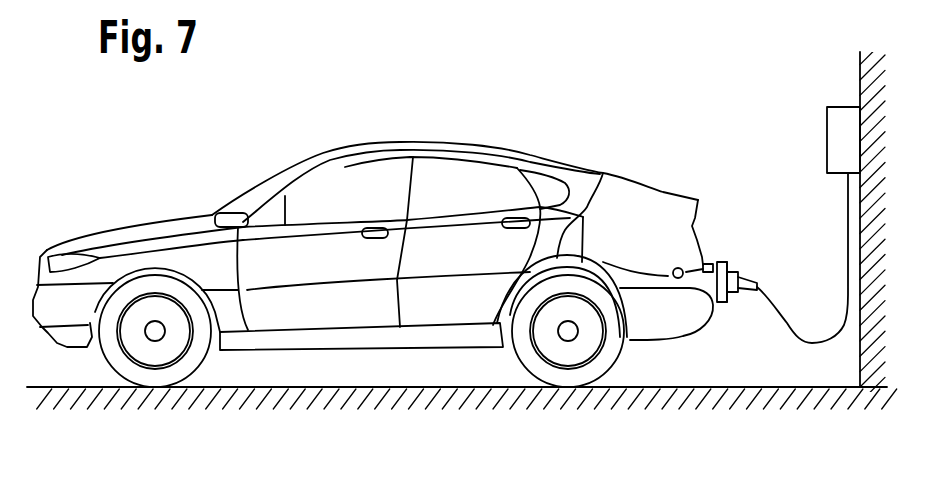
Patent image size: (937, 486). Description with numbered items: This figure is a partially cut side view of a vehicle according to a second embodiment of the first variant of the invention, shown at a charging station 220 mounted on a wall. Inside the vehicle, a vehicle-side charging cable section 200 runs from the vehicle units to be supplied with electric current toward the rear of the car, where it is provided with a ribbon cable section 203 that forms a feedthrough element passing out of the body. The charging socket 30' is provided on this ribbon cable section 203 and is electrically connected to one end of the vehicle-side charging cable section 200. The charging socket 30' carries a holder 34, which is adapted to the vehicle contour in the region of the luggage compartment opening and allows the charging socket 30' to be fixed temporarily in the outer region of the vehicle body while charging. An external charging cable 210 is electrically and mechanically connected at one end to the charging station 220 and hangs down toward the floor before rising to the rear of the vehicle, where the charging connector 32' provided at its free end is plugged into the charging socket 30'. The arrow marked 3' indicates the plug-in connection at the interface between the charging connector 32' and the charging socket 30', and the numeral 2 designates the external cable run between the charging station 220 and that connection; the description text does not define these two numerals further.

The charging cable 2 is at (787, 305).
The charging plug connection 3' is at (753, 221).
The charging socket 30' is at (722, 362).
The charging connector 32' is at (757, 326).
The holder 34 is at (705, 263).
The vehicle-side charging cable section 200 is at (385, 286).
The ribbon cable section 203 is at (692, 263).
The external charging cable 210 is at (815, 344).
The charging station 220 is at (837, 128).